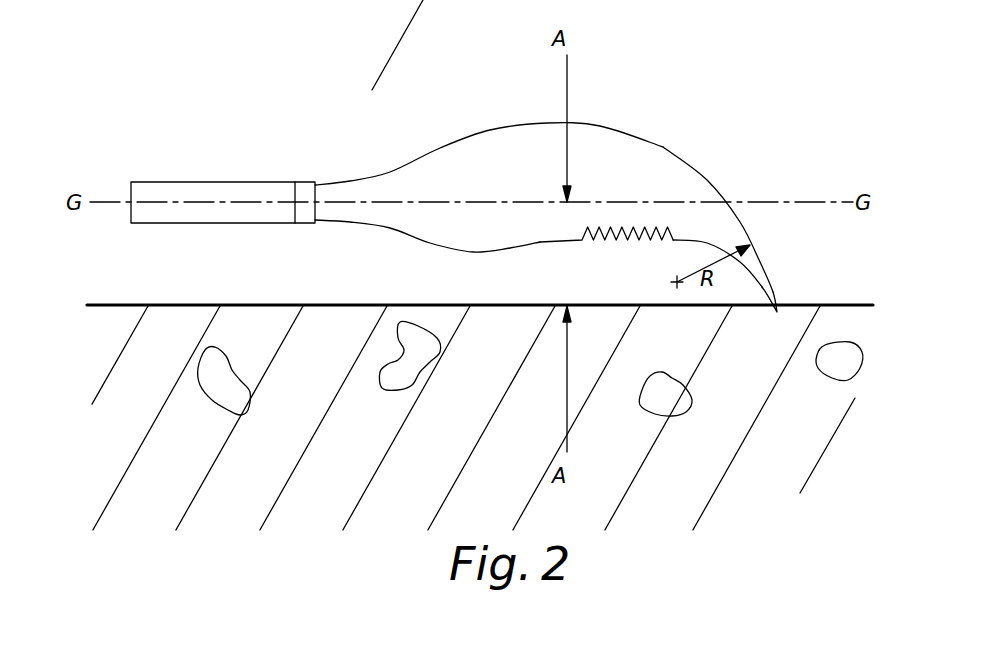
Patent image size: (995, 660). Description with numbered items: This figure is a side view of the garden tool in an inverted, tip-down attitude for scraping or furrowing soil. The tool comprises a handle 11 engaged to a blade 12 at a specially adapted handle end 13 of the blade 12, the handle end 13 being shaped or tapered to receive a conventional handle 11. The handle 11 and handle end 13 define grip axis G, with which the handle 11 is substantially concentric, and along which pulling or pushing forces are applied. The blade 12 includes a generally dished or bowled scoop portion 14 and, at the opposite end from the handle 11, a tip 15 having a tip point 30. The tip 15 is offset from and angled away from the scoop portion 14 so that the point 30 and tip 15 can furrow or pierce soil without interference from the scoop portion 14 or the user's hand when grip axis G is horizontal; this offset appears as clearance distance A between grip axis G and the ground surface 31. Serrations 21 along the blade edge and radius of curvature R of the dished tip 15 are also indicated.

The handle 11 is at (214, 182).
The blade 12 is at (663, 147).
The handle end 13 is at (372, 221).
The scoop portion 14 is at (490, 175).
The tip 15 is at (762, 245).
The serrated cutting edge 21 is at (533, 203).
The tip point 30 is at (777, 312).
The ground surface 31 is at (120, 305).